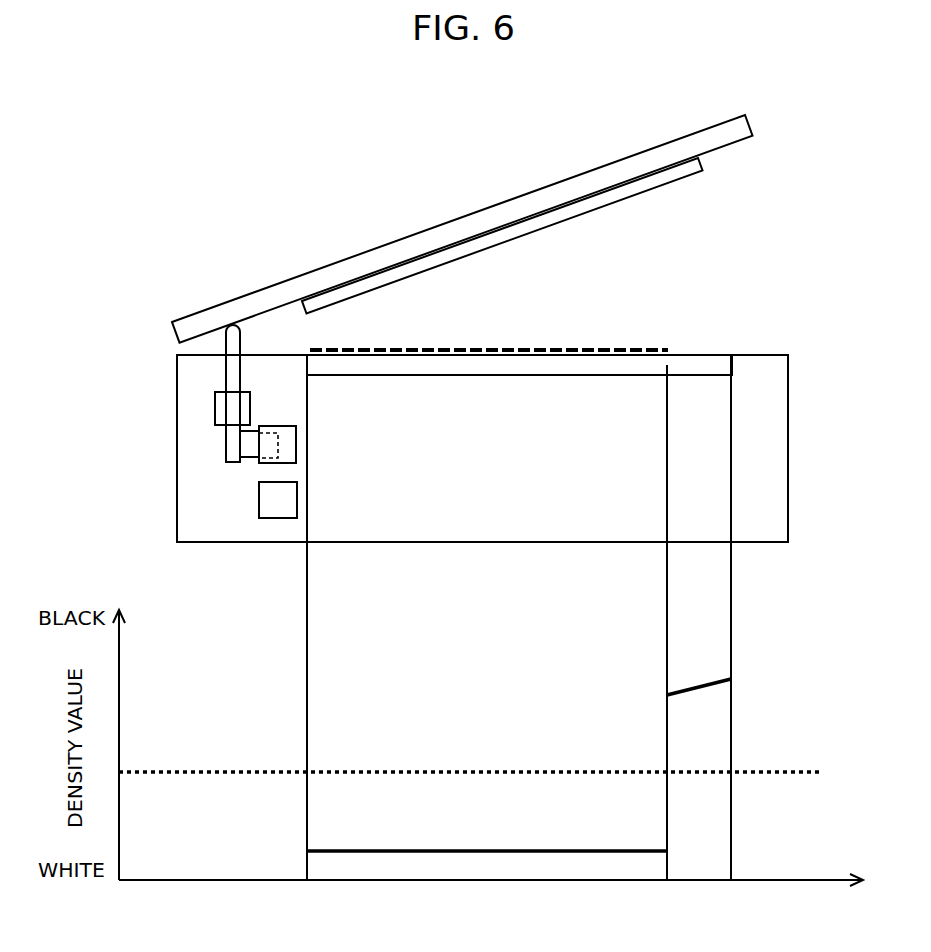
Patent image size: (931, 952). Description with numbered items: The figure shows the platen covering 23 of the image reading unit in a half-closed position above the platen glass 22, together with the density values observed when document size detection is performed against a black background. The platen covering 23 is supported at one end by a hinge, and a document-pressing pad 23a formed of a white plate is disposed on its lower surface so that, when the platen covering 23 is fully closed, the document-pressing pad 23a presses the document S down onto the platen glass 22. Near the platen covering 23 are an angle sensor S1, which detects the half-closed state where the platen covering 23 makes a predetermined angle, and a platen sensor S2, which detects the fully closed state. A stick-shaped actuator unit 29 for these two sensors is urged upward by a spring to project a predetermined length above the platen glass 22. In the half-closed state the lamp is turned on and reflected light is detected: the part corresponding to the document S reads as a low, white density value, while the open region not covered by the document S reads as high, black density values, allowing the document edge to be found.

The platen glass 22 is at (495, 363).
The platen covering 23 is at (378, 258).
The document-pressing pad 23a is at (522, 223).
The actuator unit 29 is at (232, 372).
The document S is at (515, 350).
The angle sensor S1 is at (280, 443).
The platen sensor S2 is at (275, 500).